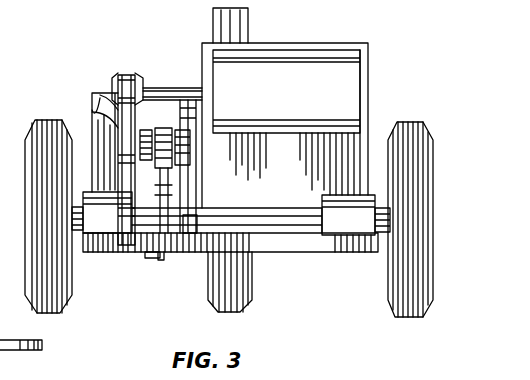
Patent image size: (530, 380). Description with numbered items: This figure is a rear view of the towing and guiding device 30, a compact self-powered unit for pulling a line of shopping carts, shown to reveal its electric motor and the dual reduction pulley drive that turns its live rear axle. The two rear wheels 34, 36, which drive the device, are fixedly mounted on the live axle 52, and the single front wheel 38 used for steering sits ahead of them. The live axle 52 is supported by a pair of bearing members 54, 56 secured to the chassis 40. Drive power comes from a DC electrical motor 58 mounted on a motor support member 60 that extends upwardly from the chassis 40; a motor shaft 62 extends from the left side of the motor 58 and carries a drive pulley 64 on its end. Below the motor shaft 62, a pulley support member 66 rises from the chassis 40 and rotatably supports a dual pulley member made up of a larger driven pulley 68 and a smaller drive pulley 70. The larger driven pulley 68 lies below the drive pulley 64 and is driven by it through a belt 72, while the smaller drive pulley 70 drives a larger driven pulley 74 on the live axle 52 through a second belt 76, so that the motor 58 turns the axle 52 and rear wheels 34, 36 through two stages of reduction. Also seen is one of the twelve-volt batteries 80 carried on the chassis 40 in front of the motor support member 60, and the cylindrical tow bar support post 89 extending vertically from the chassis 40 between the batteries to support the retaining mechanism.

The towing and guiding device 30 is at (330, 298).
The rear wheel 34 is at (47, 120).
The rear wheel 36 is at (415, 122).
The front wheel 38 is at (247, 297).
The chassis 40 is at (300, 240).
The live axle 52 is at (260, 218).
The bearing member 54 is at (108, 218).
The bearing member 56 is at (348, 220).
The DC electrical motor 58 is at (304, 96).
The motor support member 60 is at (320, 43).
The motor shaft 62 is at (175, 88).
The drive pulley 64 is at (112, 84).
The pulley support member 66 is at (188, 248).
The larger driven pulley 68 is at (100, 97).
The smaller drive pulley 70 is at (185, 135).
The belt 72 is at (128, 80).
The larger driven pulley 74 is at (150, 252).
The belt 76 is at (160, 258).
The battery 80 is at (100, 95).
The tow bar support post 89 is at (248, 25).